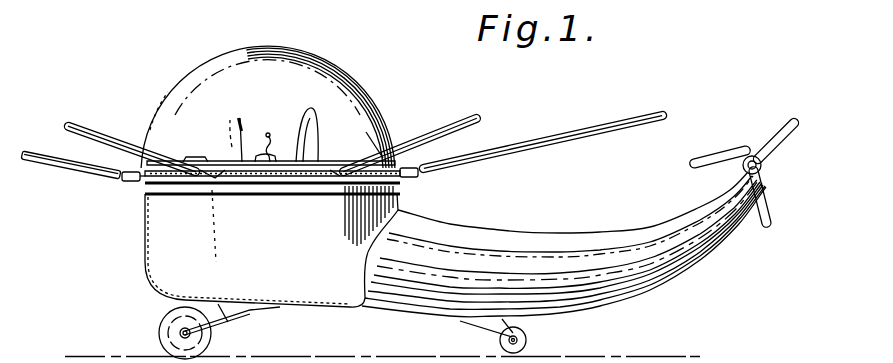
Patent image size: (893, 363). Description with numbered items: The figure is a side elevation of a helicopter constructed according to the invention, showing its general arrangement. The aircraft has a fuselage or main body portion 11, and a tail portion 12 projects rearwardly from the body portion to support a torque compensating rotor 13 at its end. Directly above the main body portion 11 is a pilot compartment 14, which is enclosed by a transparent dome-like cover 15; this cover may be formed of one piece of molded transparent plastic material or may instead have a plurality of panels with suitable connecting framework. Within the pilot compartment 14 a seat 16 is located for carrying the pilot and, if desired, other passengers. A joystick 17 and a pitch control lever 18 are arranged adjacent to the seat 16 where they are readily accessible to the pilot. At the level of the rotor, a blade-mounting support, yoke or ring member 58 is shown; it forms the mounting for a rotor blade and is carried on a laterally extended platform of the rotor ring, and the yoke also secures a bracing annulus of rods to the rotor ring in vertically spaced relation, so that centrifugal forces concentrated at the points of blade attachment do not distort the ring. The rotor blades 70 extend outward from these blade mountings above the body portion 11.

The fuselage or main body portion 11 is at (150, 237).
The tail portion 12 is at (550, 236).
The torque compensating rotor 13 is at (762, 165).
The pilot compartment 14 is at (367, 132).
The transparent dome-like cover 15 is at (333, 60).
The seat 16 is at (312, 117).
The joystick 17 is at (238, 117).
The pitch control lever 18 is at (266, 134).
The blade-mounting support, yoke or ring member 58 is at (145, 185).
The rotor blades 70 is at (87, 168).